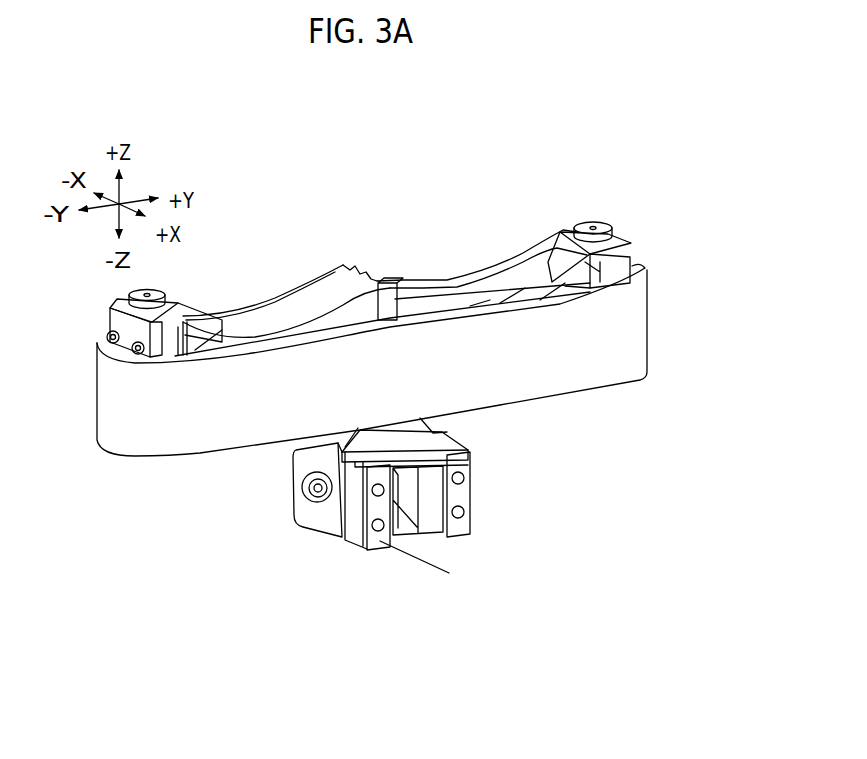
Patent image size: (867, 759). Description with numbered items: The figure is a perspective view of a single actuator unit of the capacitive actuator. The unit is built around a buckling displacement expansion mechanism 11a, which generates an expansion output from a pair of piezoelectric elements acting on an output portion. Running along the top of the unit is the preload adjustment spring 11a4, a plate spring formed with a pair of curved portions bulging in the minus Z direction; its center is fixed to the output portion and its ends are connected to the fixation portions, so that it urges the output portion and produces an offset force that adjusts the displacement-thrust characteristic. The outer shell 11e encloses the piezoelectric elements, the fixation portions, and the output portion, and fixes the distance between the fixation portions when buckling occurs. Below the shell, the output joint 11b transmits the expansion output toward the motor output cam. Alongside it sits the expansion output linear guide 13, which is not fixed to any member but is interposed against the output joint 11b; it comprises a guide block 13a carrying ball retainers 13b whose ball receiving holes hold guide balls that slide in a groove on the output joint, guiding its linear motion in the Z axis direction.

The buckling displacement expansion mechanism 11a is at (634, 217).
The preload adjustment spring 11a4 is at (497, 288).
The outer shell 11e is at (617, 360).
The output joint 11b is at (291, 487).
The expansion output linear guide 13 is at (386, 514).
The guide block 13a is at (453, 438).
The ball retainer 13b is at (460, 528).